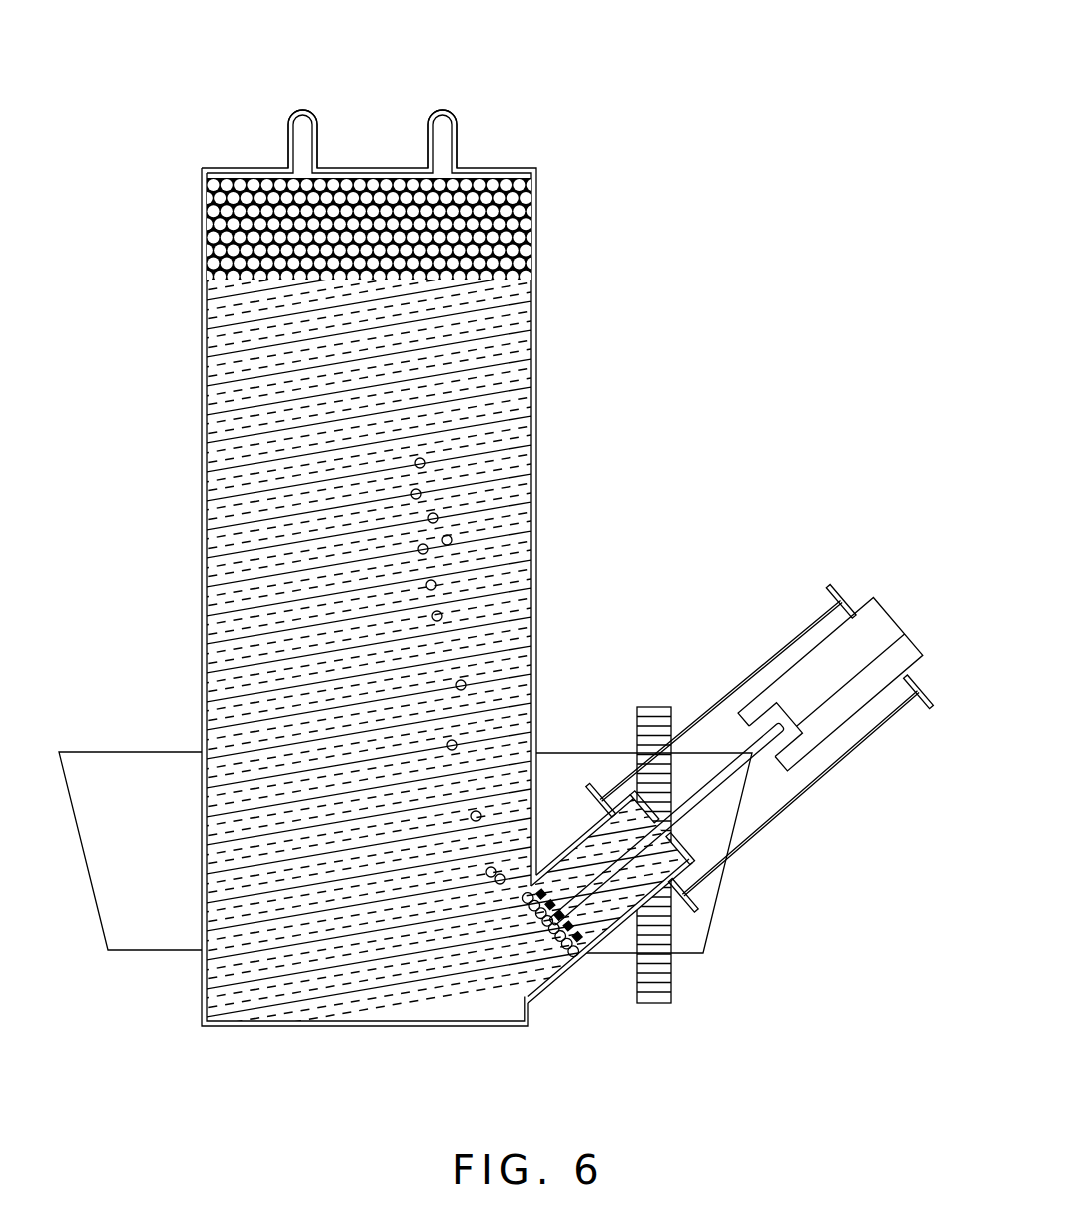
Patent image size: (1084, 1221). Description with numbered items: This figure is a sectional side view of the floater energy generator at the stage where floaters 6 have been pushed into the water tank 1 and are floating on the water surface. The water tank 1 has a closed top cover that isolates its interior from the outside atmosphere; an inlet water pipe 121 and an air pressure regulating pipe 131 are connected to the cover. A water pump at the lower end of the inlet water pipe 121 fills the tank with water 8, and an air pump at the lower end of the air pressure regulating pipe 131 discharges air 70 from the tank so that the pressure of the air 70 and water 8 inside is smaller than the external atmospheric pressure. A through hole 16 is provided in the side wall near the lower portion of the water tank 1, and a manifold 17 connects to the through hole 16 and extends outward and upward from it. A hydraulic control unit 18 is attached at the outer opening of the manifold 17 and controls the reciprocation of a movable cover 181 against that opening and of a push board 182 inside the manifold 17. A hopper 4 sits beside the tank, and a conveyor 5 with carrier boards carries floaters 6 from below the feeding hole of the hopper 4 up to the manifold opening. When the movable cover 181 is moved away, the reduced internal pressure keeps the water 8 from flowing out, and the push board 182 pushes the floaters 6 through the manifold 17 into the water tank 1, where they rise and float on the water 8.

The water tank 1 is at (204, 480).
The hopper 4 is at (125, 770).
The conveyor 5 is at (652, 715).
The floaters 6 is at (212, 232).
The water 8 is at (317, 912).
The through hole 16 is at (527, 942).
The manifold 17 is at (572, 966).
The hydraulic control unit 18 is at (867, 628).
The air 70 is at (242, 185).
The inlet water pipe 121 is at (303, 145).
The air pressure regulating pipe 131 is at (441, 145).
The movable cover 181 is at (697, 857).
The push board 182 is at (585, 955).